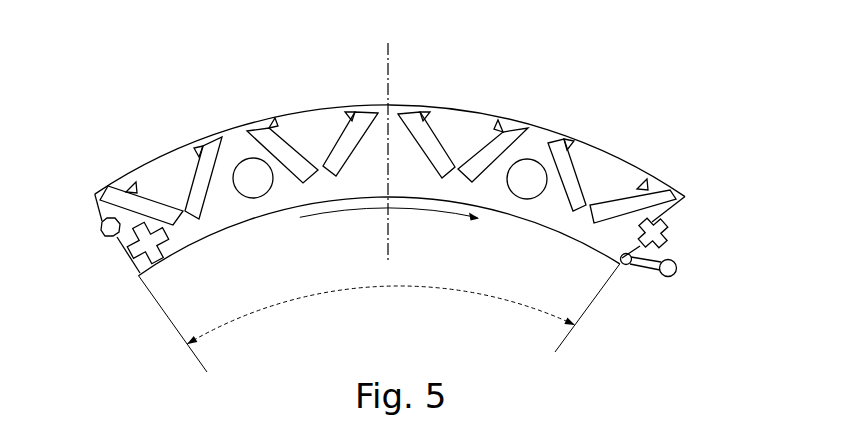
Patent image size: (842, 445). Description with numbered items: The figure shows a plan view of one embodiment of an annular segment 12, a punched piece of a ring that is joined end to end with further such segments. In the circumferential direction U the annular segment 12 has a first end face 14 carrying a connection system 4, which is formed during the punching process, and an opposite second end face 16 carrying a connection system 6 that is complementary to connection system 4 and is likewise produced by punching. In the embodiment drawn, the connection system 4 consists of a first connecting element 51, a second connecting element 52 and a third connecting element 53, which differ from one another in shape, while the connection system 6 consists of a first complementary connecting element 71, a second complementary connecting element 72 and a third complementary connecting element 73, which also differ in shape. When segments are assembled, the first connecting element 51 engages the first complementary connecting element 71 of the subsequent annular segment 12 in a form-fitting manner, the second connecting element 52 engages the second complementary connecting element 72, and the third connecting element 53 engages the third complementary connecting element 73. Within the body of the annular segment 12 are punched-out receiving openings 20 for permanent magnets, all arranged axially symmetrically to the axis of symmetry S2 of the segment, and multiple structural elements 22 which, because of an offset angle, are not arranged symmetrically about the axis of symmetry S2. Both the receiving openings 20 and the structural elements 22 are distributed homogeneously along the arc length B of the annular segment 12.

The connection system 4 is at (669, 250).
The first connecting element 51 is at (652, 268).
The second connecting element 52 is at (668, 241).
The third connecting element 53 is at (641, 221).
The connection system 6 is at (114, 270).
The first complementary connecting element 71 is at (156, 268).
The second complementary connecting element 72 is at (105, 233).
The third complementary connecting element 73 is at (96, 195).
The annular segment 12 is at (428, 201).
The first end face 14 is at (632, 215).
The second end face 16 is at (120, 190).
The receiving openings 20 is at (183, 198).
The structural elements 22 is at (255, 190).
The arc length B is at (391, 289).
The circumferential direction U is at (332, 214).
The axis of symmetry S2 is at (386, 61).